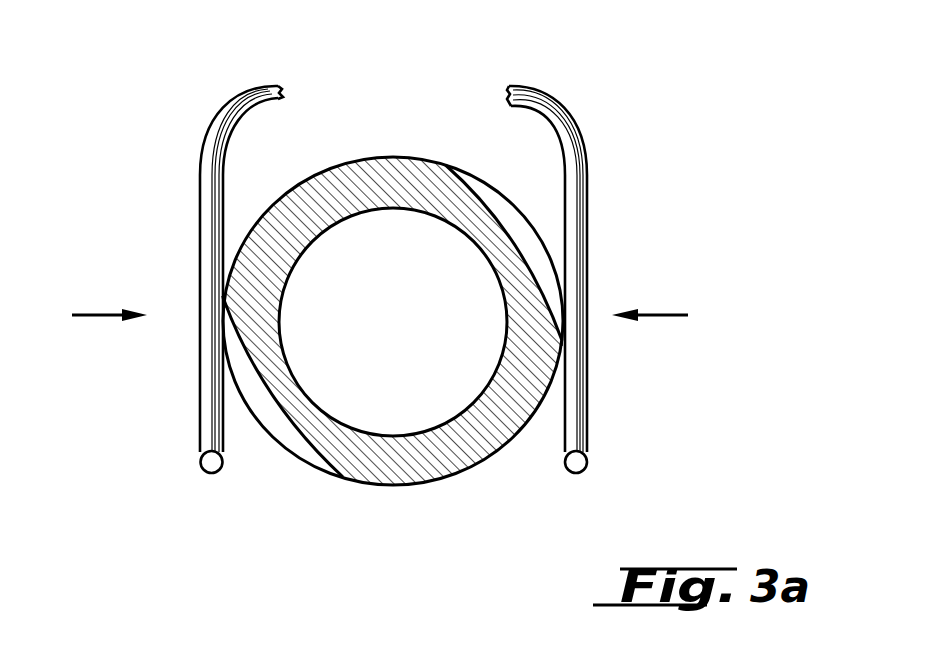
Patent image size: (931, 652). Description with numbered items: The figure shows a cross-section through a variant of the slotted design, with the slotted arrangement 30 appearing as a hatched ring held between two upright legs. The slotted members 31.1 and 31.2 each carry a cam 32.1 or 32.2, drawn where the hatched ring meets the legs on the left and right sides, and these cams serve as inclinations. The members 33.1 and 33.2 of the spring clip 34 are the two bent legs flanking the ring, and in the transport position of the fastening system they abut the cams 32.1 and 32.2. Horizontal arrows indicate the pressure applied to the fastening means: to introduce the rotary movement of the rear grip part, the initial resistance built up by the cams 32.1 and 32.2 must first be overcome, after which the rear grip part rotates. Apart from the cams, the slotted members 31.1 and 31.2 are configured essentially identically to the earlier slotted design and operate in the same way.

The tube cross-section 30 is at (393, 321).
The slotted member 31.1 is at (272, 433).
The slotted member 31.2 is at (501, 191).
The cam 32.1 is at (222, 302).
The cam 32.2 is at (563, 342).
The member of the spring clip 33.1 is at (208, 204).
The member of the spring clip 33.2 is at (575, 187).
The spring clip 34 is at (252, 80).